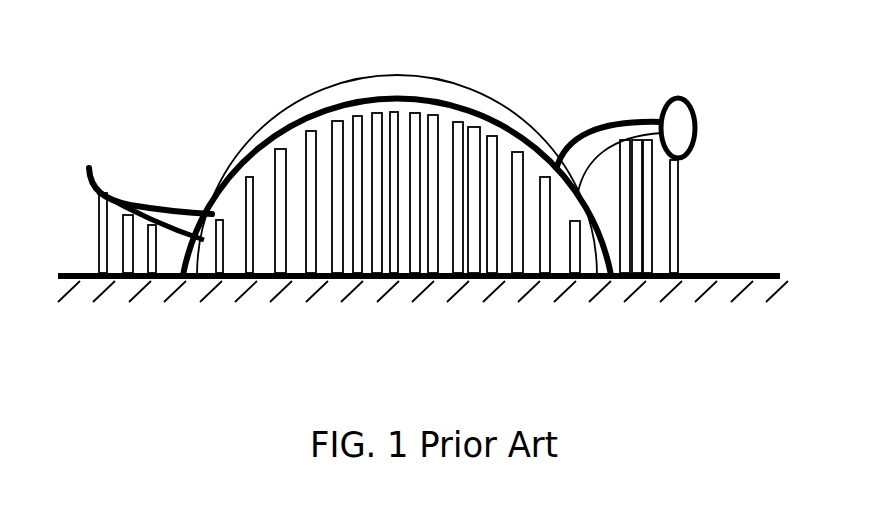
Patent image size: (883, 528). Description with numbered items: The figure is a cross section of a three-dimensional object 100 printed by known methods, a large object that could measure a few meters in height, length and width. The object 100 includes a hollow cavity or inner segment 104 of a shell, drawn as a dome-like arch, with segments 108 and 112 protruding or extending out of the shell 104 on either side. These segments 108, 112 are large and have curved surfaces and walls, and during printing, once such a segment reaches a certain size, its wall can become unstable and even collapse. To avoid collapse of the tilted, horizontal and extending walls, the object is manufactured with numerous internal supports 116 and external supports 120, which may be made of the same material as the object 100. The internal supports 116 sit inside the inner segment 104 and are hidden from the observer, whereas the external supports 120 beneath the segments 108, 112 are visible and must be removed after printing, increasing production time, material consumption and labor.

The 3D object 100 is at (341, 75).
The inner segment 104 is at (416, 128).
The segment 108 is at (600, 128).
The segment 112 is at (157, 210).
The internal supports 116 is at (439, 237).
The external supports 120 is at (98, 268).